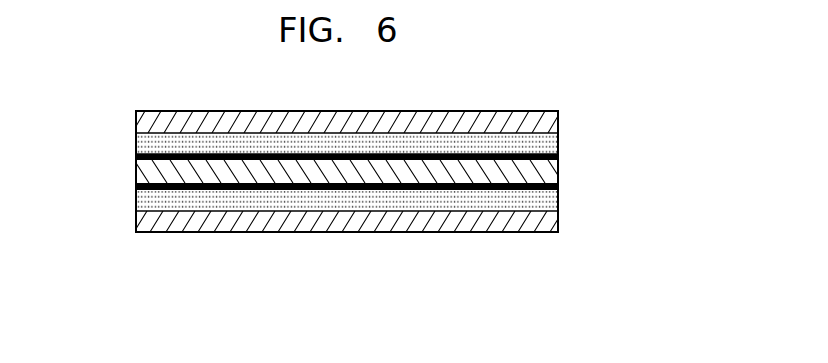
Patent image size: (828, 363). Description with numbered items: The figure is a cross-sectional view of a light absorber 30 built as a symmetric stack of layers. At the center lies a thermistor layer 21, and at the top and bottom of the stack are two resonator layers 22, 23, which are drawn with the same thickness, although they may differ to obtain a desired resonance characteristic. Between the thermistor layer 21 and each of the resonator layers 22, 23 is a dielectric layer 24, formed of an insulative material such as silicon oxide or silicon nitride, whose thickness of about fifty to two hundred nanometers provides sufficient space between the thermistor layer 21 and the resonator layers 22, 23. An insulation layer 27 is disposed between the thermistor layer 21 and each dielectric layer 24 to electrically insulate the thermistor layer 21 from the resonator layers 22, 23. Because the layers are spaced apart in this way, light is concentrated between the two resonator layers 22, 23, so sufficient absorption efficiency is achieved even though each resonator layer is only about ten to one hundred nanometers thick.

The light absorber 30 is at (425, 268).
The resonator layer 23 is at (548, 122).
The dielectric layer 24 is at (543, 147).
The insulation layer 27 is at (135, 157).
The thermistor layer 21 is at (548, 172).
The resonator layer 22 is at (548, 215).